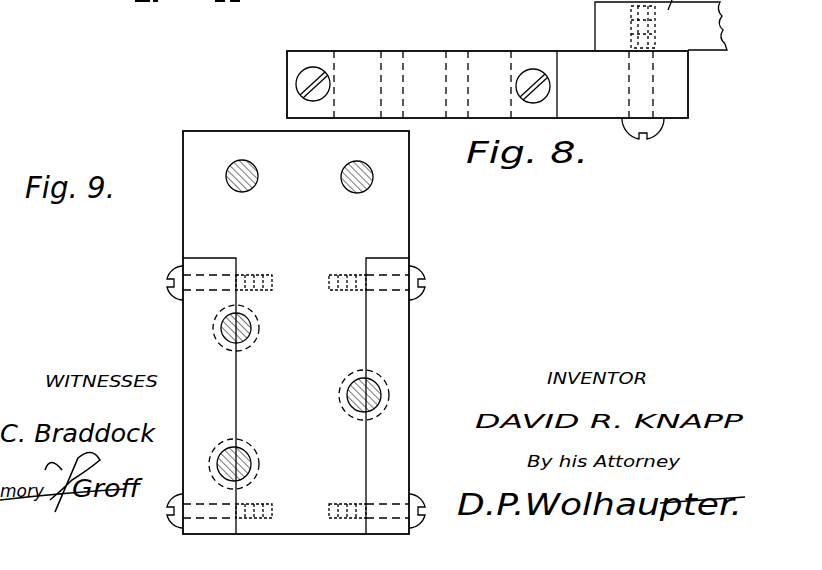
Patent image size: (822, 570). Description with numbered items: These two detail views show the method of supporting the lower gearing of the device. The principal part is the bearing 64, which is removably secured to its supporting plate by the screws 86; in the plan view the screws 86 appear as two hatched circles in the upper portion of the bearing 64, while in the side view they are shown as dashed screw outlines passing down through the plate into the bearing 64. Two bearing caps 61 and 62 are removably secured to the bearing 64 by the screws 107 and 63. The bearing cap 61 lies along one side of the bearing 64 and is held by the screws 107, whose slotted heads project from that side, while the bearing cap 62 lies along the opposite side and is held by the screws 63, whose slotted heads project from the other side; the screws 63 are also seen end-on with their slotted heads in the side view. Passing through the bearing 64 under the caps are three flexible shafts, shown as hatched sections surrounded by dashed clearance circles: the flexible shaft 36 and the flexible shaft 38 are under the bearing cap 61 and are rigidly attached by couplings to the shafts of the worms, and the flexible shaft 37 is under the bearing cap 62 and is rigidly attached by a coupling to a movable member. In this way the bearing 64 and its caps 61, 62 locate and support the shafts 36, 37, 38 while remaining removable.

In FIG. 9, the flexible shaft 36 is at (220, 328).
In FIG. 9, the flexible shaft 37 is at (372, 394).
In FIG. 9, the flexible shaft 38 is at (240, 462).
In FIG. 9, the bearing cap 61 is at (193, 368).
In FIG. 8, the bearing cap 62 is at (423, 62).
In FIG. 9, the bearing cap 62 is at (395, 362).
In FIG. 8, the screw 63 is at (300, 78).
In FIG. 9, the screw 63 is at (418, 279).
In FIG. 8, the bearing 64 is at (654, 59).
In FIG. 9, the bearing 64 is at (296, 332).
In FIG. 8, the screw 86 is at (660, 124).
In FIG. 9, the screw 86 is at (340, 178).
In FIG. 9, the screw 107 is at (165, 281).